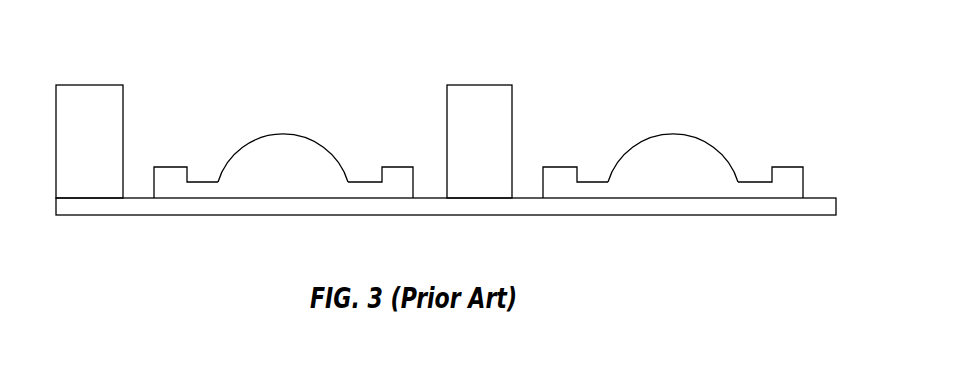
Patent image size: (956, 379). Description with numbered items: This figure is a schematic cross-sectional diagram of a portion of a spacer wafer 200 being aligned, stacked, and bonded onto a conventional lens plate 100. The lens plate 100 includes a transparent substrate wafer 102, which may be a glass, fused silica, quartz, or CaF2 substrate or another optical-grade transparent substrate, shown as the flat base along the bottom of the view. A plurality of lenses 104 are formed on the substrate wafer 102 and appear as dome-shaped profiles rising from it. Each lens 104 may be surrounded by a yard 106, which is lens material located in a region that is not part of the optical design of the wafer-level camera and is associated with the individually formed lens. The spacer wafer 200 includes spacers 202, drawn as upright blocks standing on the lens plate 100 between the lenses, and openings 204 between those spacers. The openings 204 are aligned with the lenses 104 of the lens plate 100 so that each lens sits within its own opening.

The lens plate 100 is at (170, 262).
The transparent substrate wafer 102 is at (673, 215).
The lens 104 is at (305, 118).
The yard 106 is at (174, 152).
The spacer wafer 200 is at (485, 70).
The spacer 202 is at (103, 120).
The opening 204 is at (275, 70).